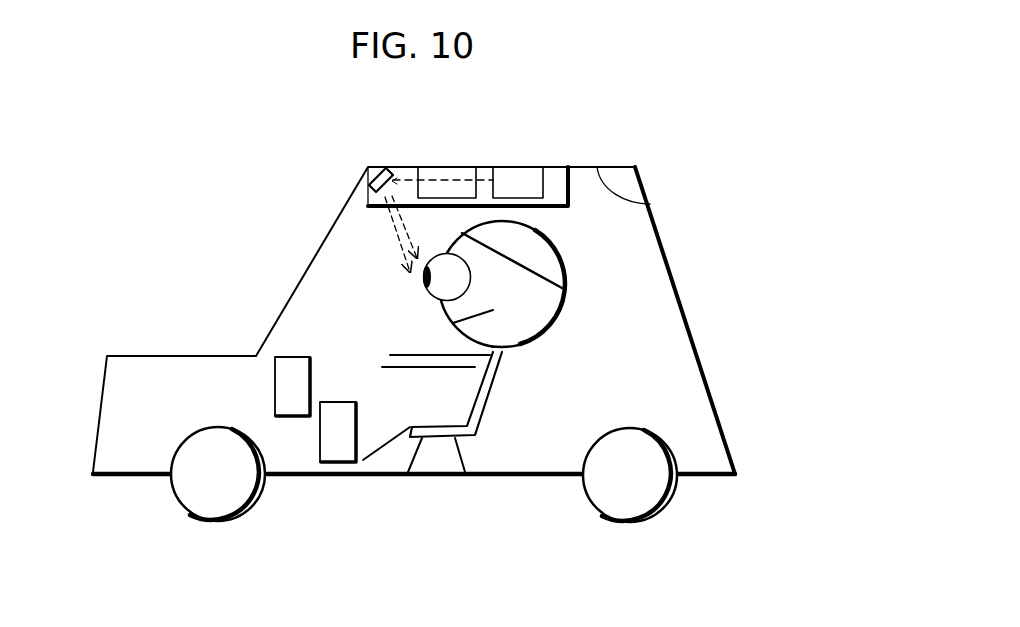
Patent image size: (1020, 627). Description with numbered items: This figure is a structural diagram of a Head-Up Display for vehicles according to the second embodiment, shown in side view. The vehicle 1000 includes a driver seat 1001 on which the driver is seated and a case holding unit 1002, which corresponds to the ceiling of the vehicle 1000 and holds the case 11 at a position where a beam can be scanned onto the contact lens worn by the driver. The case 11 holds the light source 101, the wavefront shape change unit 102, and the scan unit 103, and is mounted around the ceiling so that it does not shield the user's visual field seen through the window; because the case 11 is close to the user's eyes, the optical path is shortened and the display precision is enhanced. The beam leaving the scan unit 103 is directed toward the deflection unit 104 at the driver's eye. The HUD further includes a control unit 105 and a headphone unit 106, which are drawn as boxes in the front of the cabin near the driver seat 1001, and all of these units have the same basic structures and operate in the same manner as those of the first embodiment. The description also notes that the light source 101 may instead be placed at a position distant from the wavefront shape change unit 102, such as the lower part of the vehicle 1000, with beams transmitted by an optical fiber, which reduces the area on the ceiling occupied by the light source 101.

The case 11 is at (554, 180).
The light source 101 is at (520, 177).
The wavefront shape change unit 102 is at (447, 172).
The scan unit 103 is at (380, 168).
The deflection unit 104 is at (412, 272).
The control unit 105 is at (288, 377).
The headphone unit 106 is at (335, 440).
The vehicle 1000 is at (681, 152).
The driver seat 1001 is at (433, 445).
The case holding unit 1002 is at (650, 204).